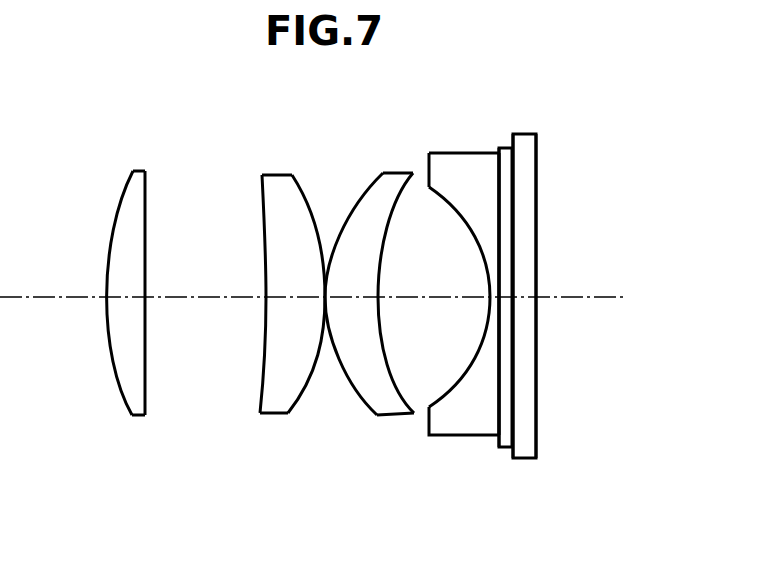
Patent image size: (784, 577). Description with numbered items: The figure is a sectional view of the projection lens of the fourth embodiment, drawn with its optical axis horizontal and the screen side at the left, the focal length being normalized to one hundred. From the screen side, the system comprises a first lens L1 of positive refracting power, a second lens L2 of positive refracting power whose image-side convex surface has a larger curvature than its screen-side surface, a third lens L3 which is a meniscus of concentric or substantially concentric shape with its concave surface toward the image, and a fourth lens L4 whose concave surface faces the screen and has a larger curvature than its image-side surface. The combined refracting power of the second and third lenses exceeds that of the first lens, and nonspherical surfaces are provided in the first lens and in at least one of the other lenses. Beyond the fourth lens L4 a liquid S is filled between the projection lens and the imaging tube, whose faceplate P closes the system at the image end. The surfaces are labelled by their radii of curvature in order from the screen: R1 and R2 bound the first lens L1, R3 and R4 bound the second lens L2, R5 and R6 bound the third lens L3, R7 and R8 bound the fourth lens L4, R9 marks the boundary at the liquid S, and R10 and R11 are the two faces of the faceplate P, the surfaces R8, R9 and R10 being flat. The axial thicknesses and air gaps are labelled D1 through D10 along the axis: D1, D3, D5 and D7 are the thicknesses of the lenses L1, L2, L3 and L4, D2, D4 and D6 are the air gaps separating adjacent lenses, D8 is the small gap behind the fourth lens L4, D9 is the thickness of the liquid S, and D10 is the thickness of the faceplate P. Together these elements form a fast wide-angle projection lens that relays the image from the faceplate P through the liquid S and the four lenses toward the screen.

The first lens L1 is at (108, 368).
The second lens L2 is at (268, 370).
The third lens L3 is at (371, 369).
The fourth lens L4 is at (462, 359).
The liquid S is at (509, 357).
The faceplate P is at (571, 350).
The radius of curvature R1 is at (122, 380).
The radius of curvature R2 is at (147, 395).
The radius of curvature R3 is at (263, 382).
The radius of curvature R4 is at (298, 390).
The radius of curvature R5 is at (355, 393).
The radius of curvature R6 is at (417, 420).
The radius of curvature R7 is at (443, 400).
The radius of curvature R8 is at (500, 390).
The radius of curvature R9 is at (500, 447).
The radius of curvature R10 is at (515, 408).
The radius of curvature R11 is at (537, 398).
The thickness D1 is at (123, 295).
The air gap D2 is at (197, 295).
The thickness D3 is at (285, 295).
The air gap D4 is at (322, 290).
The thickness D5 is at (343, 295).
The air gap D6 is at (423, 293).
The thickness D7 is at (492, 295).
The air gap D8 is at (503, 295).
The thickness D9 is at (521, 295).
The thickness D10 is at (536, 295).